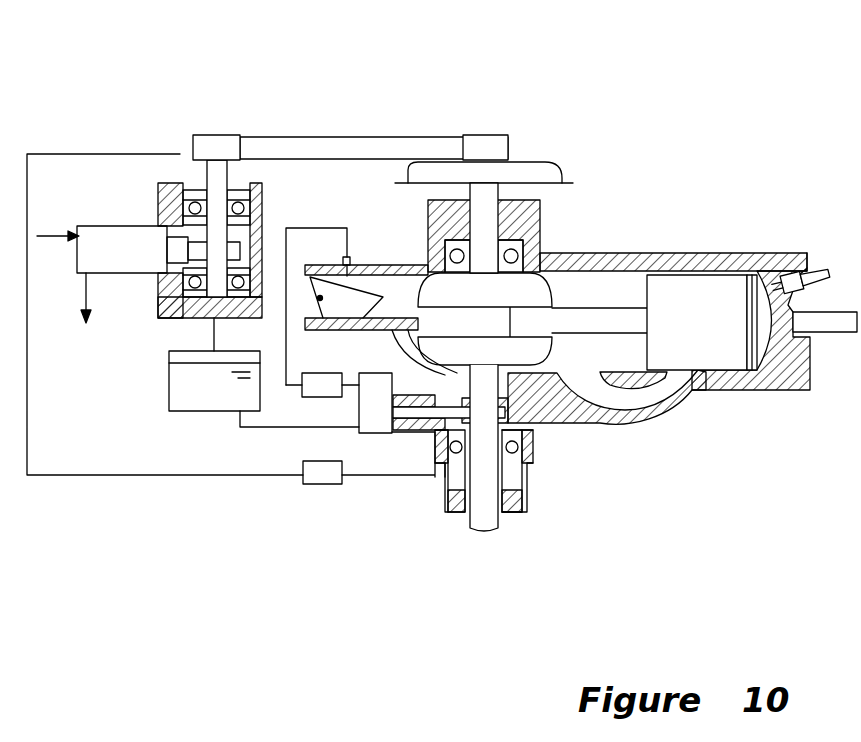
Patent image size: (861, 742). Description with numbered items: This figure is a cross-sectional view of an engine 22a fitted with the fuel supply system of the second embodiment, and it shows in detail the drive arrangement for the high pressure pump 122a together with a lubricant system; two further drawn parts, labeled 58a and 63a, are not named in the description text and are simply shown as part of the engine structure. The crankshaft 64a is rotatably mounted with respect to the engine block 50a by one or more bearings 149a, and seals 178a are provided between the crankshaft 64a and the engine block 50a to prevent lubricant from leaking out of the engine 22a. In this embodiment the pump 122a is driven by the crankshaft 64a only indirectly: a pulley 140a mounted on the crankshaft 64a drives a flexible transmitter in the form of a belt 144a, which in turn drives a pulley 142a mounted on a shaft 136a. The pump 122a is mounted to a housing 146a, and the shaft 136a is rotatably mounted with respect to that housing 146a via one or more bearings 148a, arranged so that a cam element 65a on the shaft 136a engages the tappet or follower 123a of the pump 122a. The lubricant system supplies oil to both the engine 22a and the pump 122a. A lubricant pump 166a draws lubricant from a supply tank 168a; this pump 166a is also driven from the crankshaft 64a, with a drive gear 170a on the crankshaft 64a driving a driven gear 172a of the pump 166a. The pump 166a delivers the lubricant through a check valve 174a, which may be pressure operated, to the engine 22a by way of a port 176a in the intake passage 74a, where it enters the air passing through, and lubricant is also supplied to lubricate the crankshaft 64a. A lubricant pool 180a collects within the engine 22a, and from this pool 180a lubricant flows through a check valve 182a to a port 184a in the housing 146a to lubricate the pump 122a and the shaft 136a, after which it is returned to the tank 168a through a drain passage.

The engine 22a is at (782, 200).
The engine block 50a is at (437, 455).
The piston 58a is at (722, 293).
The flange base 63a is at (548, 167).
The crankshaft 64a is at (478, 513).
The cam element 65a is at (228, 252).
The intake passage 74a is at (410, 268).
The pump 122a is at (104, 224).
The tappet or follower 123a is at (117, 277).
The shaft 136a is at (228, 170).
The pulley 140a is at (495, 140).
The pulley 142a is at (230, 148).
The belt 144a is at (355, 150).
The housing 146a is at (180, 183).
The bearings 148a is at (186, 190).
The bearings 149a is at (515, 250).
The lubricant pump 166a is at (378, 425).
The supply tank 168a is at (178, 393).
The drive gear 170a is at (547, 423).
The driven gear 172a is at (527, 483).
The check valve 174a is at (315, 388).
The port 176a is at (348, 262).
The seals 178a is at (540, 217).
The lubricant pool 180a is at (462, 476).
The check valve 182a is at (323, 488).
The port 184a is at (200, 195).